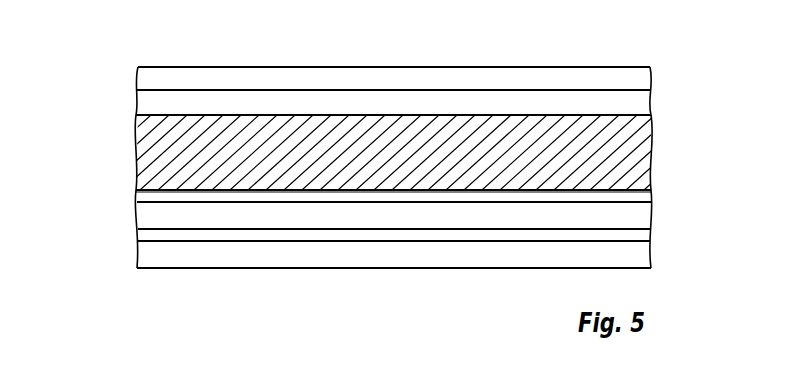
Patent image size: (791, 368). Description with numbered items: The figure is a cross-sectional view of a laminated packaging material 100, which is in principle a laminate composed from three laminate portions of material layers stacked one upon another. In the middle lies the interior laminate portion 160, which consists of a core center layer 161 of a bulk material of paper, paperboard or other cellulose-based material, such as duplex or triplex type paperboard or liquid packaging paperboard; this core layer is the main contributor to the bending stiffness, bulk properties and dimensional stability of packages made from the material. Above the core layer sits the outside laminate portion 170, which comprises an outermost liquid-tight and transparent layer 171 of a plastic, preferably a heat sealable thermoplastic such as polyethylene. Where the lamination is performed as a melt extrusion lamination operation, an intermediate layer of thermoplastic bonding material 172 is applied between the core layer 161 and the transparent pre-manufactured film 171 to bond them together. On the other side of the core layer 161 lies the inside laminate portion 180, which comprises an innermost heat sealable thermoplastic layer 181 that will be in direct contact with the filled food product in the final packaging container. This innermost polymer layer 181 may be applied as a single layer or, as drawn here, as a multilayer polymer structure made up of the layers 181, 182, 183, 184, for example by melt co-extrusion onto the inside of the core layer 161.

The packaging material 100 is at (488, 54).
The outside laminate portion 170 is at (385, 96).
The outermost liquid-tight and transparent layer 171 is at (647, 79).
The intermediate layer of thermoplastic bonding material 172 is at (647, 102).
The interior laminate portion 160 is at (385, 152).
The core center layer 161 is at (649, 153).
The inside laminate portion 180 is at (385, 225).
The innermost heat sealable thermoplastic layer 181 is at (647, 254).
The polymer layer of multilayer polymer structure 182 is at (647, 237).
The polymer layer of multilayer polymer structure 183 is at (647, 217).
The polymer layer of multilayer polymer structure 184 is at (646, 195).